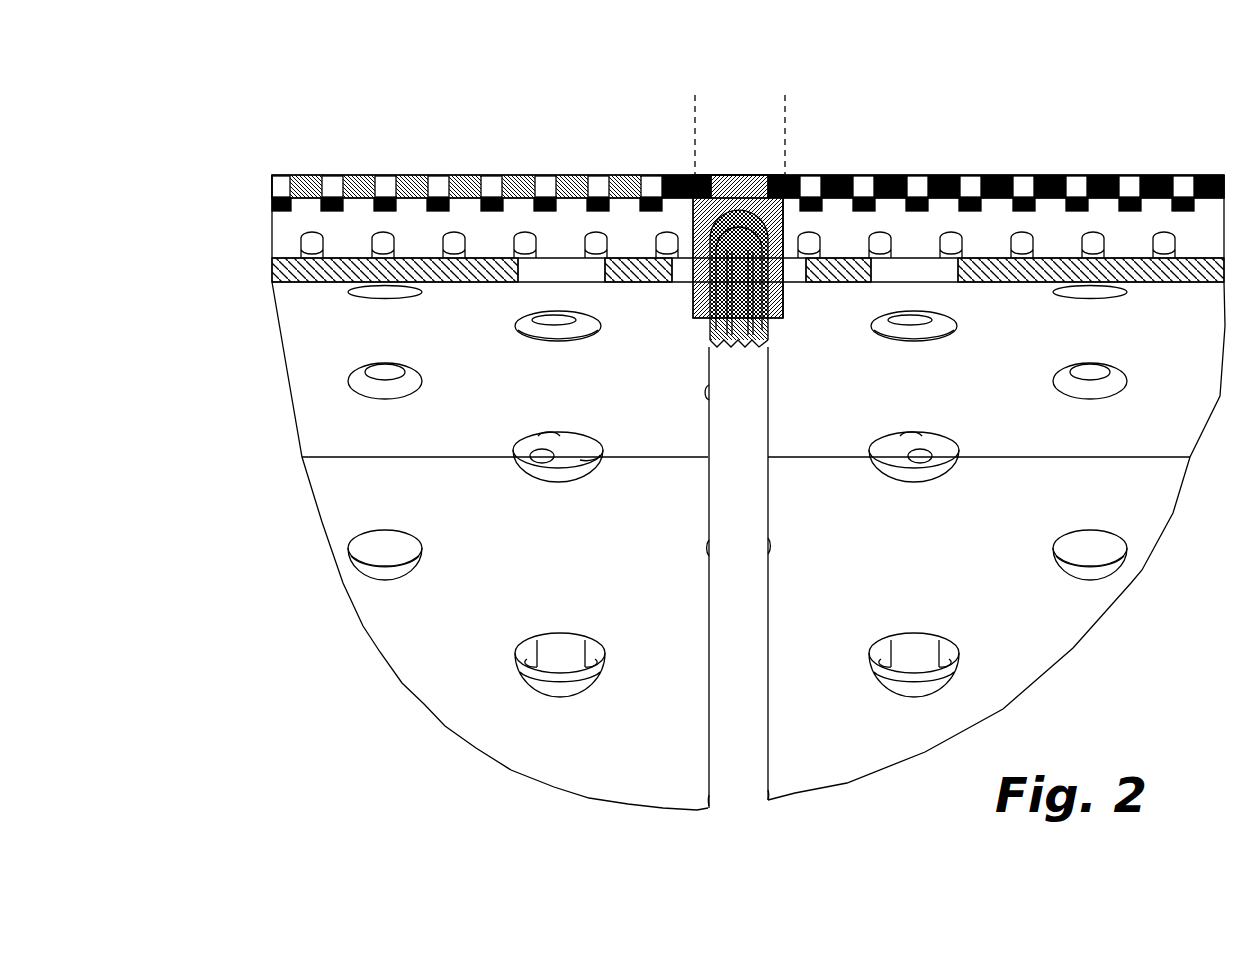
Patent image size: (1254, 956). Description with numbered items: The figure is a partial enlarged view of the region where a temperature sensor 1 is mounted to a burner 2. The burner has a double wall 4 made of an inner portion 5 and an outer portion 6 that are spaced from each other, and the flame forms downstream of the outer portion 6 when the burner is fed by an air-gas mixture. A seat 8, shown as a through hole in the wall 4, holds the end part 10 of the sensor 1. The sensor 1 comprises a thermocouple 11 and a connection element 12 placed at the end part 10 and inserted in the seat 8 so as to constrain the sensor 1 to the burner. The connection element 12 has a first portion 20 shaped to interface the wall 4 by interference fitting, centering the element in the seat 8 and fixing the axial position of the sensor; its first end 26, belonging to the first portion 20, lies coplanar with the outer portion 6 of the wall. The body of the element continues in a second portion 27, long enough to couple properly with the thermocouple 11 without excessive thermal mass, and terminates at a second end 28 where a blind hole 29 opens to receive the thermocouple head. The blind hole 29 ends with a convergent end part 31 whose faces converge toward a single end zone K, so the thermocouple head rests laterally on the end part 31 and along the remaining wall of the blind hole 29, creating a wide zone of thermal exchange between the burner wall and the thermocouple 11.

The temperature sensor 1 is at (659, 600).
The burner 2 is at (250, 167).
The wall 4 is at (246, 312).
The inner portion 5 is at (455, 283).
The outer portion 6 is at (463, 176).
The seat 8 is at (767, 177).
The end part 10 is at (785, 95).
The thermocouple 11 is at (782, 737).
The connection element 12 is at (792, 229).
The first portion 20 is at (740, 193).
The first end 26 is at (730, 176).
The second portion 27 is at (777, 297).
The second end 28 is at (772, 327).
The blind hole 29 is at (722, 285).
The end part 31 is at (750, 220).
The end zone K is at (730, 243).